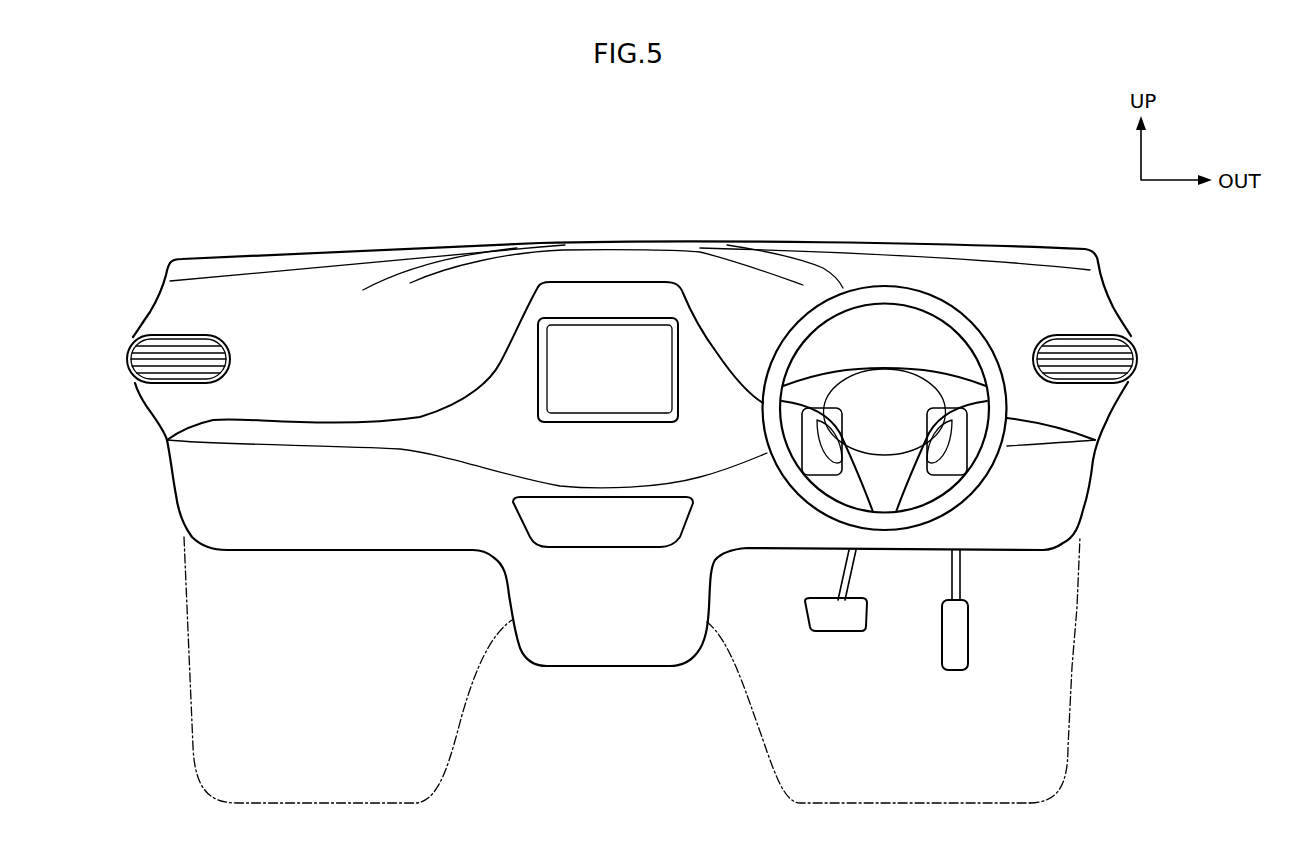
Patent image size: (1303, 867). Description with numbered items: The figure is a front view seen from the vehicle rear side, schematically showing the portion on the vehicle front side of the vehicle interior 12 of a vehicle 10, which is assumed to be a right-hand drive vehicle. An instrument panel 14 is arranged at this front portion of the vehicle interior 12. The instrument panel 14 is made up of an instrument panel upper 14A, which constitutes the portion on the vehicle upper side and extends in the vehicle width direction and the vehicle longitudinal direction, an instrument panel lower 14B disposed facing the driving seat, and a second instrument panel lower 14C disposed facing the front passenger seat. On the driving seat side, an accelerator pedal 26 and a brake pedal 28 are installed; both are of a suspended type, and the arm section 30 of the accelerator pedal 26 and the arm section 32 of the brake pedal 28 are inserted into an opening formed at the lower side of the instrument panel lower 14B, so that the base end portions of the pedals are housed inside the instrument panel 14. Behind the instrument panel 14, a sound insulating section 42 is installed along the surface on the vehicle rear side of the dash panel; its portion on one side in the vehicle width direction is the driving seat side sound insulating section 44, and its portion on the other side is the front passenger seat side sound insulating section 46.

The vehicle 10 is at (910, 176).
The vehicle interior 12 is at (813, 216).
The instrument panel 14 is at (367, 244).
The instrument panel upper 14A is at (907, 272).
The instrument panel lower 14B is at (1060, 483).
The instrument panel lower 14C is at (220, 493).
The accelerator pedal 26 is at (975, 637).
The brake pedal 28 is at (852, 640).
The arm section 30 is at (962, 574).
The arm section 32 is at (853, 572).
The sound insulating section 42 is at (1113, 627).
The driving seat side sound insulating section 44 is at (1068, 707).
The front passenger seat side sound insulating section 46 is at (203, 700).